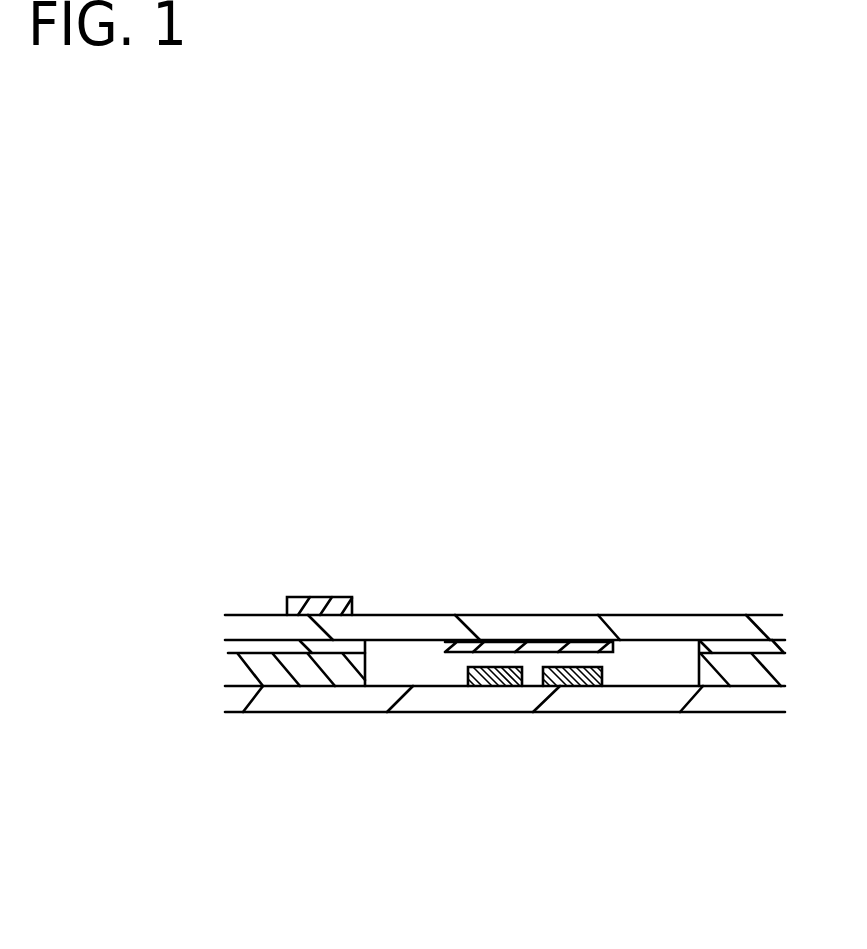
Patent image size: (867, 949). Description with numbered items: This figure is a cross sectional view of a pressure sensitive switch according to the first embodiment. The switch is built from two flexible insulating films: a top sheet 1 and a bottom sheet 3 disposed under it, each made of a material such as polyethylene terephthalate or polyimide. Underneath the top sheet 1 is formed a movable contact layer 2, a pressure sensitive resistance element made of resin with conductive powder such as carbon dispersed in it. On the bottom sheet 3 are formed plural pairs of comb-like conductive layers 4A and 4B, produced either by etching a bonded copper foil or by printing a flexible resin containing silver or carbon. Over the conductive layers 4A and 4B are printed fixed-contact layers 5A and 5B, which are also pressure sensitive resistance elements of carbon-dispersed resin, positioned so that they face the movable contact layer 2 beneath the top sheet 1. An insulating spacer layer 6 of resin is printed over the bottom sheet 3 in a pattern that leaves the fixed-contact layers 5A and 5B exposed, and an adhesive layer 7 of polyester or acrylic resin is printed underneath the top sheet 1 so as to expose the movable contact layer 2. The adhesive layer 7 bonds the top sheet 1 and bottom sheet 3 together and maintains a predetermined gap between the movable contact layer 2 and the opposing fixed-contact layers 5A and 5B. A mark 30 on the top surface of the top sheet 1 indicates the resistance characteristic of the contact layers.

The top sheet 1 is at (672, 620).
The movable contact layer 2 is at (458, 641).
The bottom sheet 3 is at (645, 700).
The conductive layer 4A is at (497, 687).
The conductive layer 4B is at (573, 687).
The fixed-contact layer 5A is at (480, 686).
The fixed-contact layer 5B is at (551, 686).
The insulating spacer layer 6 is at (752, 677).
The adhesive layer 7 is at (728, 648).
The mark 30 is at (298, 605).